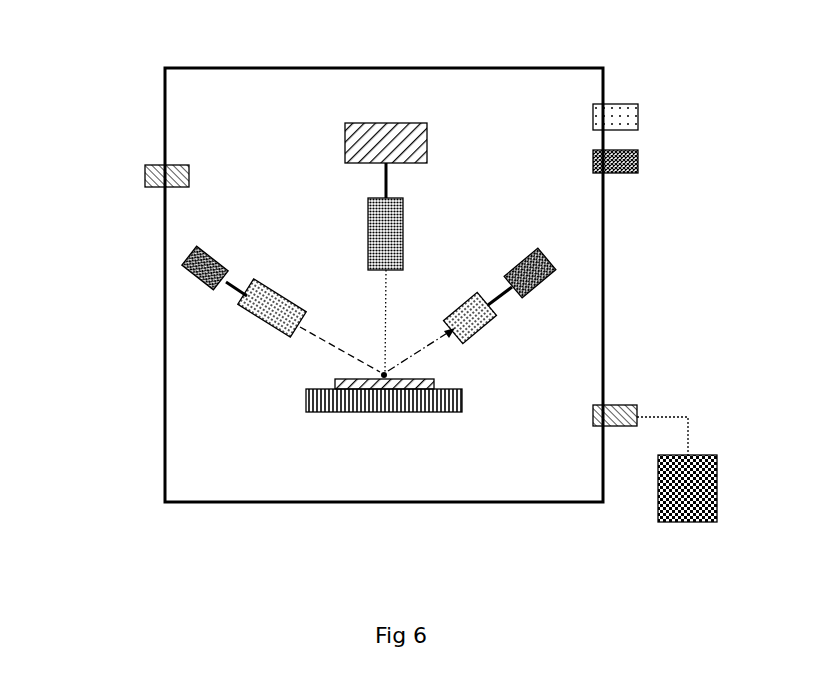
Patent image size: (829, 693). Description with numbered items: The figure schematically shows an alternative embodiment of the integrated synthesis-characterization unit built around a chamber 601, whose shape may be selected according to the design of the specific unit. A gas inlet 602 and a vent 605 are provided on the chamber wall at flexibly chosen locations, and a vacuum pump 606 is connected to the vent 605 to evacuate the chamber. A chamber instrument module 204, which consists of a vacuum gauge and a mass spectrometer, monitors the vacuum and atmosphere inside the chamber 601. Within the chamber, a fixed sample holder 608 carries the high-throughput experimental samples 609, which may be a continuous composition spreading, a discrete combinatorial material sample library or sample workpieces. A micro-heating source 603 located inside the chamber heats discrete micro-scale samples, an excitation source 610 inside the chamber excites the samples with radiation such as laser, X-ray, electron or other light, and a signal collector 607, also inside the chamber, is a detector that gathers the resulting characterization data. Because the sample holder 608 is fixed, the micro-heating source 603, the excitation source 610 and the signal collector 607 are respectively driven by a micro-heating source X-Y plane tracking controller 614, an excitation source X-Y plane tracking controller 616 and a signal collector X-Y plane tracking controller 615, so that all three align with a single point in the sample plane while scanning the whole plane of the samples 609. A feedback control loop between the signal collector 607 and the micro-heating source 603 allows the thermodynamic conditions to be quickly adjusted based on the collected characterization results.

The chamber 601 is at (165, 235).
The gas inlet 602 is at (145, 177).
The micro-heating source 603 is at (367, 232).
The vent 605 is at (625, 412).
The vacuum pump 606 is at (706, 455).
The signal collector 607 is at (482, 340).
The sample holder 608 is at (355, 412).
The high-throughput experimental samples 609 is at (335, 382).
The excitation source 610 is at (245, 306).
The micro-heating source X-Y plane tracking controller 614 is at (384, 123).
The signal collector X-Y plane tracking controller 615 is at (550, 265).
The excitation source X-Y plane tracking controller 616 is at (165, 274).
The chamber instrument module 204 is at (638, 165).